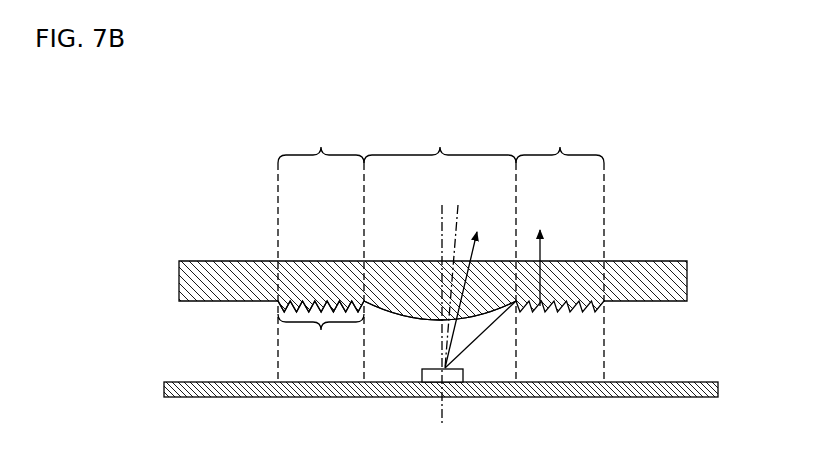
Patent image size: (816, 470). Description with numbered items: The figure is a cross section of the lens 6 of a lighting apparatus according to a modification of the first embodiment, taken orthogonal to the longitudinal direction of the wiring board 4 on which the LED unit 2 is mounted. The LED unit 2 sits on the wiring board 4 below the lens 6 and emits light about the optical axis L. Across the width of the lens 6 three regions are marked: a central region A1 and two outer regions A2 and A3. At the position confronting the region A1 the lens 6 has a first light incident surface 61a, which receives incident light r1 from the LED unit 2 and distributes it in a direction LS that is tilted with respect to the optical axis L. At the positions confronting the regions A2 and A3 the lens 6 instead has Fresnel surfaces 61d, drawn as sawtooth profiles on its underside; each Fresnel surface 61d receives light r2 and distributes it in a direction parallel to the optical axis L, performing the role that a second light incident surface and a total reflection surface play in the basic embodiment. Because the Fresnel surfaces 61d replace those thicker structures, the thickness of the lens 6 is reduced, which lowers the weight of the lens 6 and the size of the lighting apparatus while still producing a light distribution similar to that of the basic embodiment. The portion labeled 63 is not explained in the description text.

The lens 6 is at (206, 259).
The light diffusing portion 63 is at (328, 262).
The first light incident surface 61a is at (413, 314).
The Fresnel surface 61d is at (321, 332).
The LED unit 2 is at (447, 376).
The wiring board 4 is at (523, 384).
The region A1 is at (440, 140).
The region A2 is at (321, 140).
The region A3 is at (560, 140).
The optical axis L is at (441, 297).
The direction LS is at (460, 277).
The light r1 is at (480, 291).
The light r2 is at (553, 260).